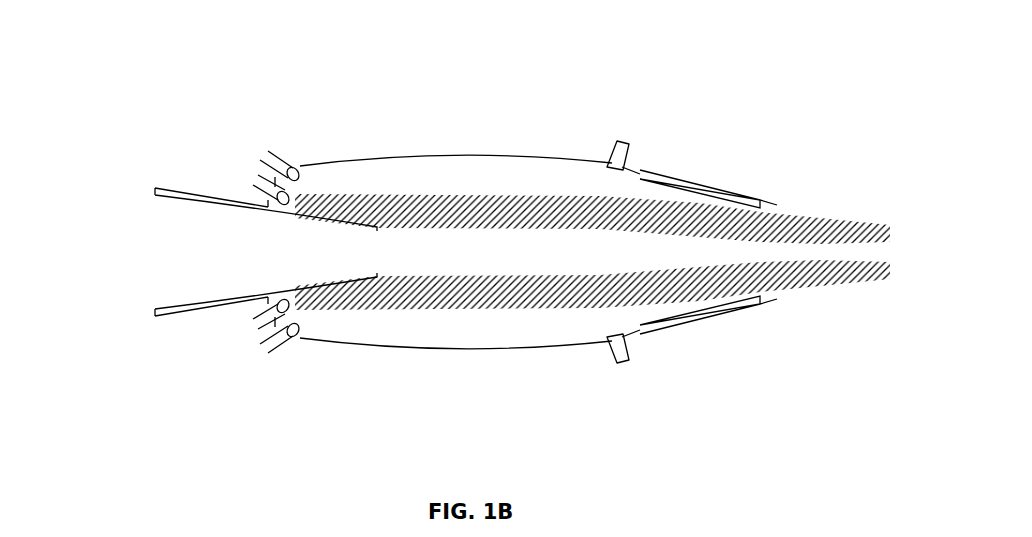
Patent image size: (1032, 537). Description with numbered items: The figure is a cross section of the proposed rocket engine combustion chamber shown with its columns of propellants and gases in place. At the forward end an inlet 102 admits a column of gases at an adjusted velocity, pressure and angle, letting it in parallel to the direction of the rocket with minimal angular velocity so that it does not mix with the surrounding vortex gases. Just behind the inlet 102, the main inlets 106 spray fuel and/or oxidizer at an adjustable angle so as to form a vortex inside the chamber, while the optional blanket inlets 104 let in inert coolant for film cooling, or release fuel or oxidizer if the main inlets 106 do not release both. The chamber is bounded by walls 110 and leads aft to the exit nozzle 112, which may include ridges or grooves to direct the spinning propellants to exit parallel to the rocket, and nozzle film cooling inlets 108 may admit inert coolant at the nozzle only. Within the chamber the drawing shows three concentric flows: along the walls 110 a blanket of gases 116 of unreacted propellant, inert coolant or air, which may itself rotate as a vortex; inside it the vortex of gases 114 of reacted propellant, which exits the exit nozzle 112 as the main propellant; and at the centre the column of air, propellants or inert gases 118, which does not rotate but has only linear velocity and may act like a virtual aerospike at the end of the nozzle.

The inlet 102 is at (176, 249).
The blanket inlets 104 is at (268, 350).
The main inlets 106 is at (280, 297).
The nozzle film cooling inlets 108 is at (628, 360).
The walls 110 is at (450, 348).
The exit nozzle 112 is at (754, 307).
The vortex of gases 114 is at (546, 205).
The blanket of gases 116 is at (447, 170).
The column of air/propellants/inert gases 118 is at (638, 250).